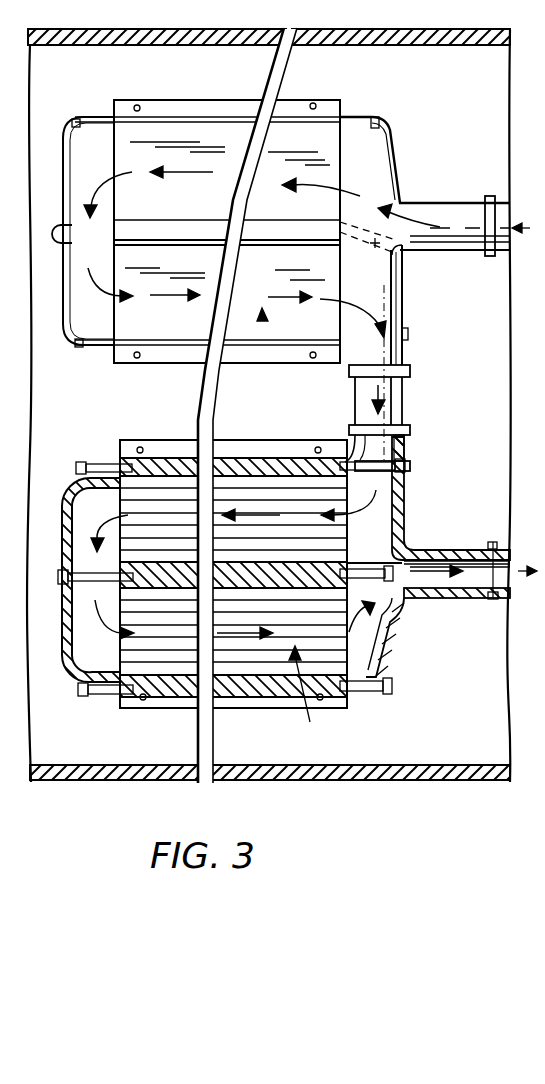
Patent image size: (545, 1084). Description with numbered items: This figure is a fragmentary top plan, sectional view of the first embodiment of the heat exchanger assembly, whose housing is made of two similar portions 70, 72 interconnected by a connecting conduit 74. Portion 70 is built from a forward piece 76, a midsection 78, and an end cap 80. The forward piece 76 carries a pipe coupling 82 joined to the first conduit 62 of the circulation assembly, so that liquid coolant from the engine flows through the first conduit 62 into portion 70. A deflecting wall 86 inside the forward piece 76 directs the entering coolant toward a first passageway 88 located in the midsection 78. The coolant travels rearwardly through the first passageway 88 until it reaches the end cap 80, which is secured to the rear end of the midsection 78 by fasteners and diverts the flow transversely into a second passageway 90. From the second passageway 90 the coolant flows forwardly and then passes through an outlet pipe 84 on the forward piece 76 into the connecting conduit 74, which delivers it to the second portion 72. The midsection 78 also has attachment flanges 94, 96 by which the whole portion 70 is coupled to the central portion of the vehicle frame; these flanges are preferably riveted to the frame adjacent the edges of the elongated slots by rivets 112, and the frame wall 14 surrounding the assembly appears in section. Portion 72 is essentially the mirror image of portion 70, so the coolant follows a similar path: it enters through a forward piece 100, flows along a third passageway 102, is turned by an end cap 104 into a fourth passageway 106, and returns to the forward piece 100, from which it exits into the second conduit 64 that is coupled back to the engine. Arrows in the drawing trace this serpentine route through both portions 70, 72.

The casing wall 14 is at (246, 0).
The first conduit 62 is at (496, 195).
The second conduit 64 is at (500, 544).
The portion 70 is at (397, 151).
The portion 72 is at (420, 466).
The connecting conduit 74 is at (403, 408).
The forward piece 76 is at (400, 178).
The midsection 78 is at (207, 130).
The end cap 80 is at (78, 157).
The pipe coupling 82 is at (486, 202).
The outlet pipe 84 is at (393, 355).
The deflecting wall 86 is at (393, 272).
The first passageway 88 is at (268, 133).
The second passageway 90 is at (262, 322).
The attachment flange 94 is at (178, 100).
The attachment flange 96 is at (178, 356).
The forward piece 100 is at (416, 485).
The third passageway 102 is at (163, 498).
The end cap 104 is at (55, 497).
The fourth passageway 106 is at (244, 656).
The rivets 112 is at (160, 80).